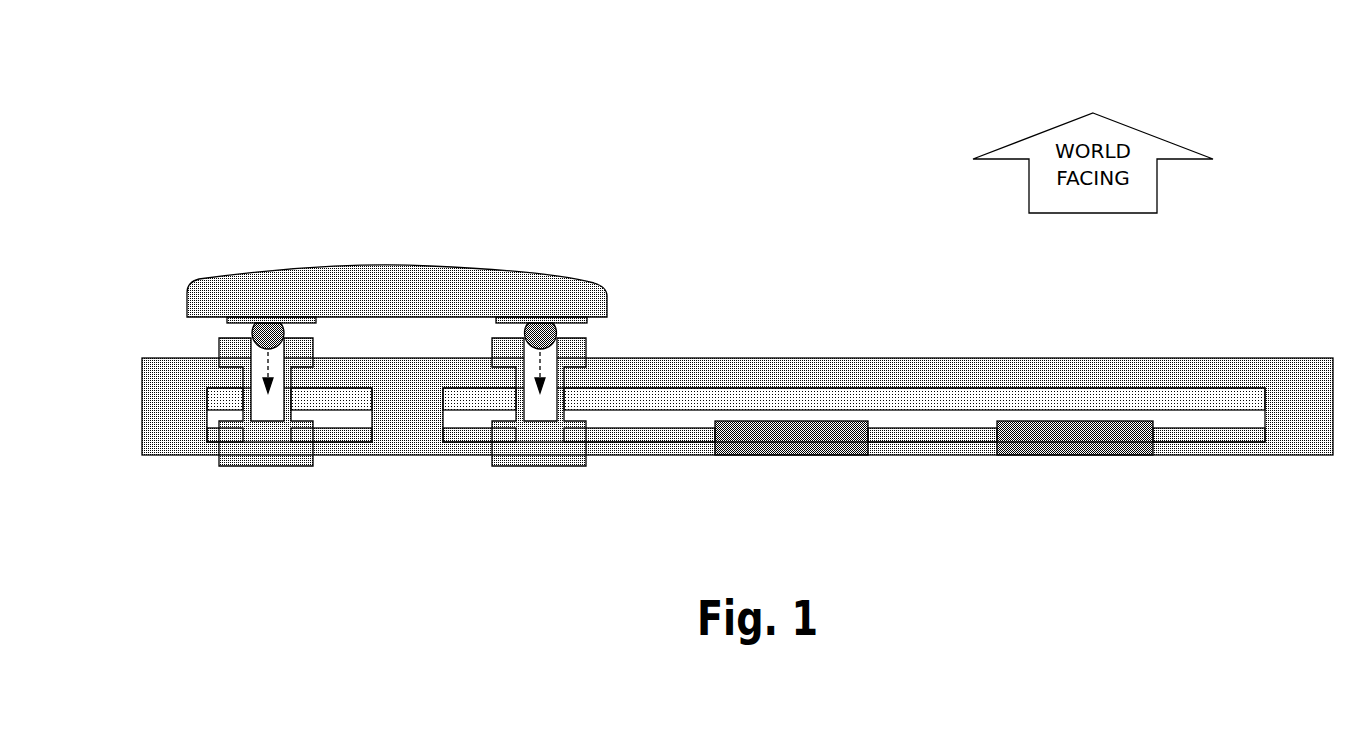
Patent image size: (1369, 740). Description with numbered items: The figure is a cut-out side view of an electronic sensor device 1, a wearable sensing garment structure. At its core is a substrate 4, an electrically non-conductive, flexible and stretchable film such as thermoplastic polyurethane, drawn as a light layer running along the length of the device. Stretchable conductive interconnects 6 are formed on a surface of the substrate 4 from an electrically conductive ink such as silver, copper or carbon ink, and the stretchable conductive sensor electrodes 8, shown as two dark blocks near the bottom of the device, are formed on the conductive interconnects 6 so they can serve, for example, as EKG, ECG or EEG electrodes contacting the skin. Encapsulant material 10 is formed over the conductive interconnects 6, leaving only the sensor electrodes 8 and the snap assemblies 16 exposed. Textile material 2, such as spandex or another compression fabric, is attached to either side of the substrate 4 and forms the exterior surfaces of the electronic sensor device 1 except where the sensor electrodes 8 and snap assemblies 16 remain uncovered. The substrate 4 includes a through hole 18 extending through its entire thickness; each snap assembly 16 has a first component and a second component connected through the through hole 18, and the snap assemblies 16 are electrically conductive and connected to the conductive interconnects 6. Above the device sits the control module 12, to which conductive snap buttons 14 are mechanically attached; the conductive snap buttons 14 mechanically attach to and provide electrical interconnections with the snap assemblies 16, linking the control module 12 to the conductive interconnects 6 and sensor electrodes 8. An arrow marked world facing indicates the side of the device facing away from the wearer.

The electronic sensor device 1 is at (1326, 58).
The textile material 2 is at (1180, 373).
The substrate 4 is at (767, 397).
The stretchable conductive interconnects 6 is at (467, 418).
The stretchable conductive sensor electrodes 8 is at (792, 441).
The encapsulant material 10 is at (348, 436).
The control module 12 is at (398, 287).
The conductive snap buttons 14 is at (253, 333).
The snap assemblies 16 is at (254, 468).
The through hole 18 is at (544, 409).